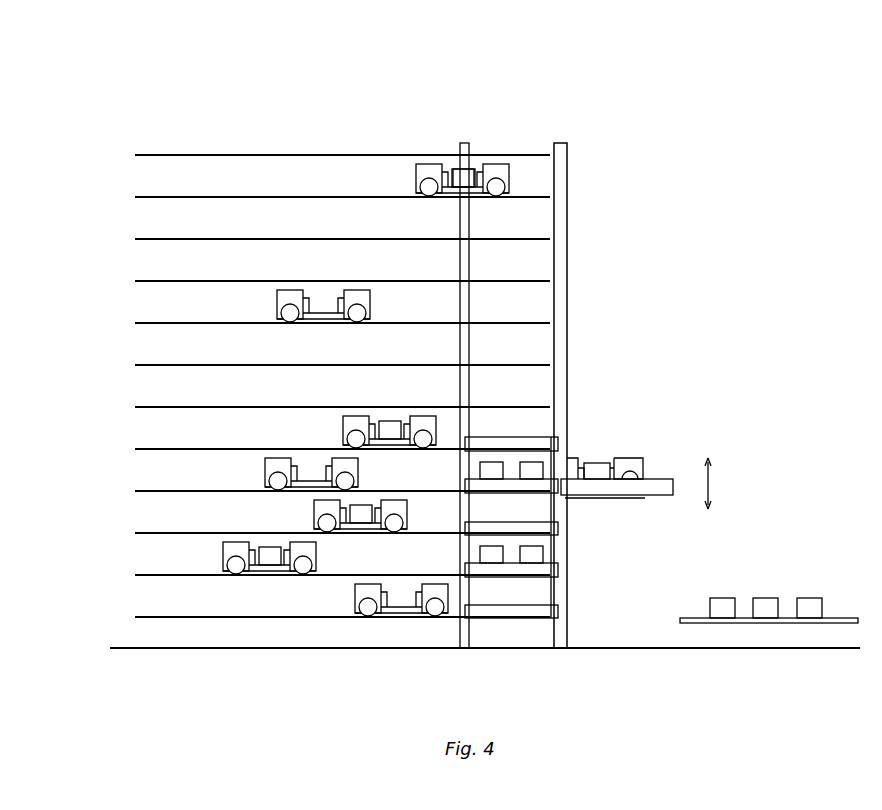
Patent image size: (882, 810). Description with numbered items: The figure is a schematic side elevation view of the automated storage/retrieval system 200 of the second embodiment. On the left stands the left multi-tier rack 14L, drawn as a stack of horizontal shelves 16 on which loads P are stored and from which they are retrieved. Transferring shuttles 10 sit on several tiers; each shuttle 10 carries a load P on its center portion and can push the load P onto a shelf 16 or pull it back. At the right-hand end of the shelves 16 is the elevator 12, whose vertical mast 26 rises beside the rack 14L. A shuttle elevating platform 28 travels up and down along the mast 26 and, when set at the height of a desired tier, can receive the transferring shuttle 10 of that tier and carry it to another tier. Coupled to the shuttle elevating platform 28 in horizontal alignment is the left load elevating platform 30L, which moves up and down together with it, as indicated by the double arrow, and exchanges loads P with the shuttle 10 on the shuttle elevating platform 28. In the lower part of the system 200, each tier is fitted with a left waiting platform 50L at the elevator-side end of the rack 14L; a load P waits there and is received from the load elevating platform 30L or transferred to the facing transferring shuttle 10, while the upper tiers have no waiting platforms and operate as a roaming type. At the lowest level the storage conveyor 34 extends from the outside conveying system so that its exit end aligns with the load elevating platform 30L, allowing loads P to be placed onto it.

The automated storage/retrieval system 200 is at (658, 78).
The left multi-tier rack 14L is at (303, 152).
The shelves 16 is at (175, 239).
The elevator 12 is at (565, 141).
The masts 26 is at (560, 285).
The left waiting platform 50L is at (510, 437).
The left load elevating platform 30L is at (661, 470).
The shuttle elevating platform 28 is at (605, 498).
The storage conveyor 34 is at (788, 615).
The transferring shuttle 10 is at (372, 300).
The load P is at (396, 422).